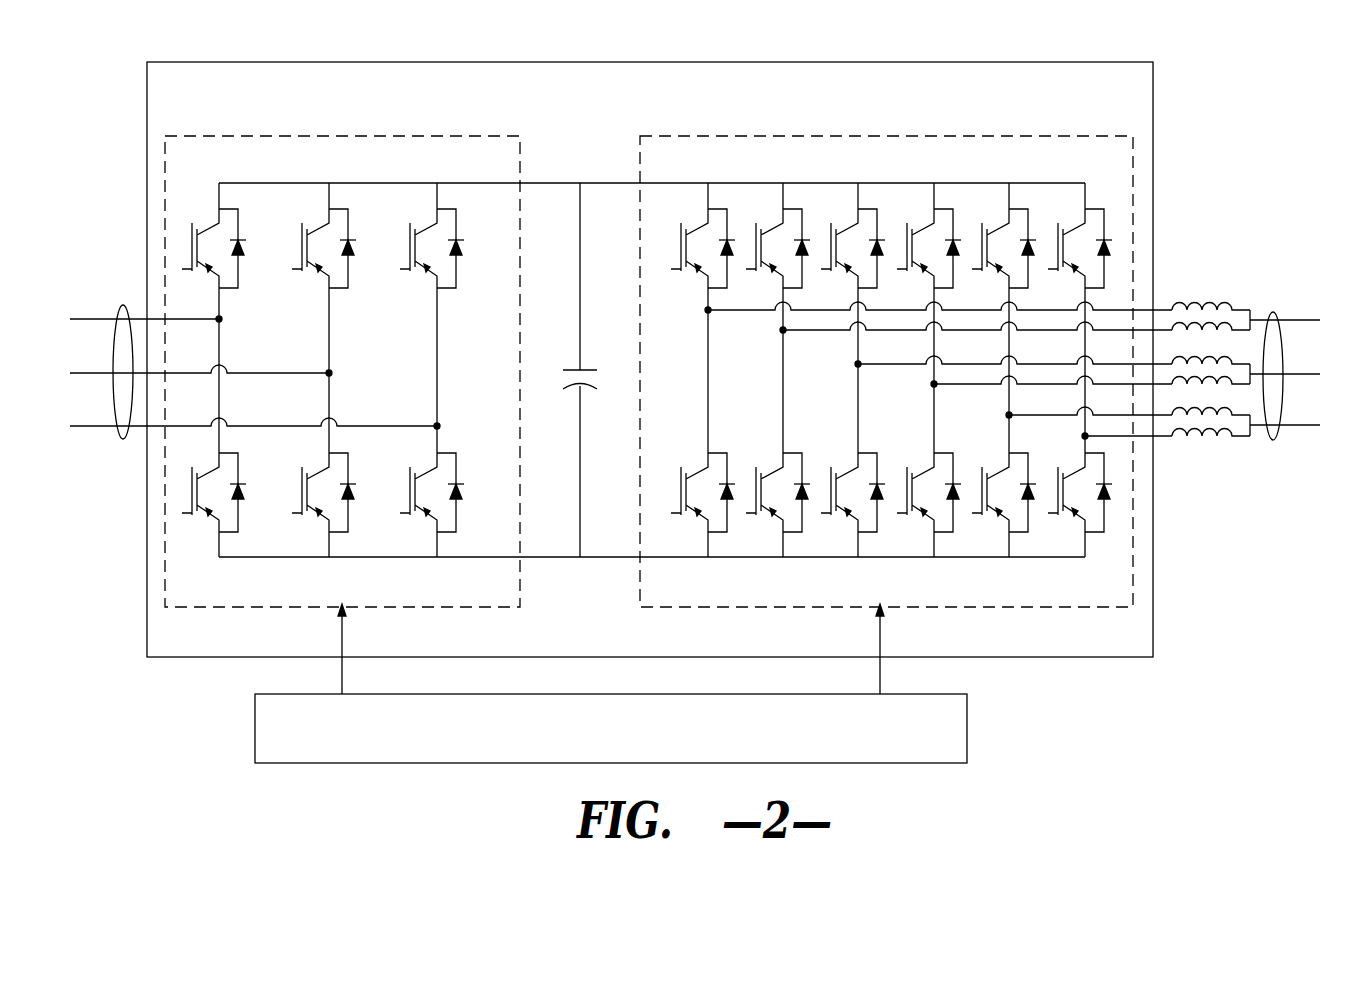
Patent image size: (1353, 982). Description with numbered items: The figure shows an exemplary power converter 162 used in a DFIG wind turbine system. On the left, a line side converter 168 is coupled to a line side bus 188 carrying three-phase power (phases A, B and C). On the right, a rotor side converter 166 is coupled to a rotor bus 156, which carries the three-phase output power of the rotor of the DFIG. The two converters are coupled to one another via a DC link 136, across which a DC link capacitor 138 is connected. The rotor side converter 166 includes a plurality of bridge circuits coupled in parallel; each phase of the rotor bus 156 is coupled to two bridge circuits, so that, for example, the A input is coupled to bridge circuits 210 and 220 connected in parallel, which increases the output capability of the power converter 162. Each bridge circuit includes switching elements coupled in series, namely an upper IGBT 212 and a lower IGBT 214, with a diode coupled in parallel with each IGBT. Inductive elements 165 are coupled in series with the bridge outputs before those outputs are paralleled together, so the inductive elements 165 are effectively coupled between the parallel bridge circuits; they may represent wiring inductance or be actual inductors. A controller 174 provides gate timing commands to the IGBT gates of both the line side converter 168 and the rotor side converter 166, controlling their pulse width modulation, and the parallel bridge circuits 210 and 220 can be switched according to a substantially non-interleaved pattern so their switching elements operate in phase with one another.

The power converter 162 is at (668, 62).
The line side converter 168 is at (366, 136).
The rotor side converter 166 is at (906, 347).
The DC link 136 is at (543, 183).
The DC link capacitor 138 is at (586, 370).
The bridge circuit 210 is at (695, 323).
The bridge circuit 220 is at (783, 193).
The upper IGBT 212 is at (671, 271).
The lower IGBT 214 is at (671, 513).
The line side bus 188 is at (122, 306).
The rotor bus 156 is at (1272, 312).
The inductive elements 165 is at (1240, 455).
The controller 174 is at (967, 737).